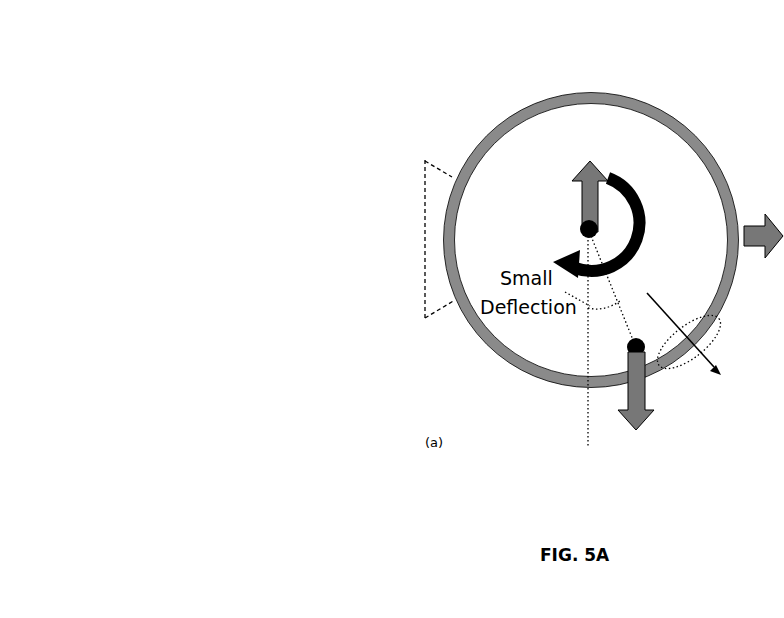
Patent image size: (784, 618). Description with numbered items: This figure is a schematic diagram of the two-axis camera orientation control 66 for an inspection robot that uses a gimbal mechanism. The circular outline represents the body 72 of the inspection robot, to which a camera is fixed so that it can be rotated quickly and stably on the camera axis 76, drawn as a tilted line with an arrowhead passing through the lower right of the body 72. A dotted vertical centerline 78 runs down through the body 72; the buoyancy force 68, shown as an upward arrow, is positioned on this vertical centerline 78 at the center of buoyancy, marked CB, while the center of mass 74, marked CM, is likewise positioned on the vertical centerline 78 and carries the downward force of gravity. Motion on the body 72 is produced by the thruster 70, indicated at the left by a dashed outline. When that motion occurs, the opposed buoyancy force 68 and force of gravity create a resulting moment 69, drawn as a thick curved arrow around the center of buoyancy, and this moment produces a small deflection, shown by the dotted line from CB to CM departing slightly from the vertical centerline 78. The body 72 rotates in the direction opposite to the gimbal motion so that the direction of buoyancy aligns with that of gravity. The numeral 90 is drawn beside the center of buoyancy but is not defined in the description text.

The two-axis camera orientation control 66 is at (58, 64).
The buoyancy force 68 is at (602, 172).
The resulting moment 69 is at (554, 225).
The thruster 70 is at (437, 158).
The body 72 is at (634, 76).
The center of mass 74 is at (661, 343).
The camera axis 76 is at (703, 318).
The vertical centerline 78 is at (580, 397).
The center of buoyancy 90 is at (612, 243).